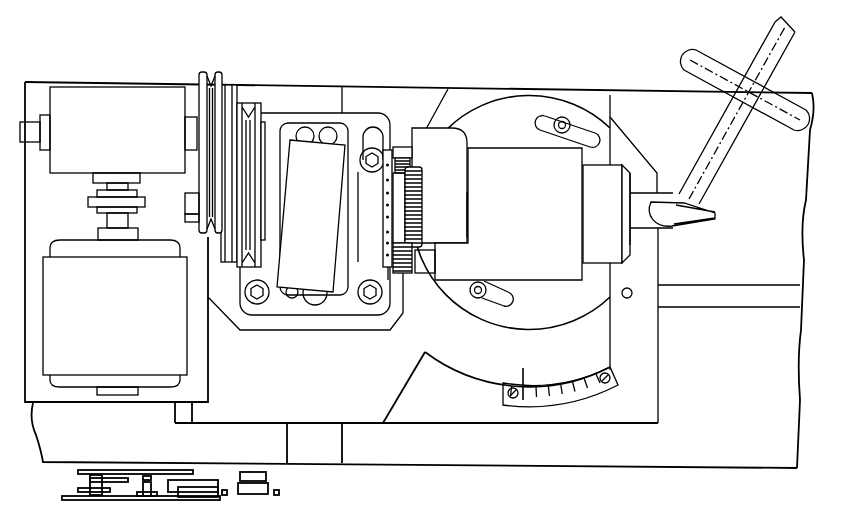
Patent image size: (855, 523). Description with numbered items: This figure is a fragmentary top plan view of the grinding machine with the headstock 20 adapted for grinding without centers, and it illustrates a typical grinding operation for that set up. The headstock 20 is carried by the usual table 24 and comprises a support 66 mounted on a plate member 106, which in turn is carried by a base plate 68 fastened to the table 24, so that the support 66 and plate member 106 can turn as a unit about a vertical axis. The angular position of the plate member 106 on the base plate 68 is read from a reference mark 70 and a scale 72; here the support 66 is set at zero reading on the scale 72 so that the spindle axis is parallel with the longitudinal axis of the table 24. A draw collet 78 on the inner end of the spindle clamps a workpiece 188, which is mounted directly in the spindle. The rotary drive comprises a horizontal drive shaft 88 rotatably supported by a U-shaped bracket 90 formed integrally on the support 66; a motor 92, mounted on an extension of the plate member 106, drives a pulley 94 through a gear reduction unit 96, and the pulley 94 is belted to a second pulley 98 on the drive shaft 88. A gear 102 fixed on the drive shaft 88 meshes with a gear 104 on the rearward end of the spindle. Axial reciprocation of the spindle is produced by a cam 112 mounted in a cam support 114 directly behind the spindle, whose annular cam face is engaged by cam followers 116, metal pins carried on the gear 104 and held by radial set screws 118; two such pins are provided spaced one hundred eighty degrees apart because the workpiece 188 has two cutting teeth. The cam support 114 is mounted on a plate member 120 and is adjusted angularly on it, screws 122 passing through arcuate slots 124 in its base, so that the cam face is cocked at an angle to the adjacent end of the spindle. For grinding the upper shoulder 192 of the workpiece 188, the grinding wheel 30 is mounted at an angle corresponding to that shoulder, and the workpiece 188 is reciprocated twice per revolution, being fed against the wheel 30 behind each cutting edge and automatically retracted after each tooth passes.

The headstock 20 is at (184, 72).
The table 24 is at (763, 470).
The grinding wheel 30 is at (713, 141).
The support 66 is at (487, 160).
The base plate 68 is at (646, 371).
The reference mark 70 is at (527, 372).
The scale 72 is at (561, 396).
The draw collet 78 is at (613, 216).
The drive shaft 88 is at (188, 204).
The U-shaped bracket 90 is at (463, 133).
The motor 92 is at (125, 315).
The pulley 94 is at (203, 92).
The gear reduction unit 96 is at (128, 131).
The second pulley 98 is at (205, 221).
The gear 102 is at (415, 194).
The gear 104 is at (397, 147).
The plate member 106 is at (596, 329).
The cam 112 is at (356, 176).
The cam support 114 is at (326, 211).
The cam followers 116 is at (383, 265).
The set screws 118 is at (407, 176).
The plate member 120 is at (356, 310).
The screws 122 is at (307, 136).
The arcuate slots 124 is at (330, 137).
The workpiece 188 is at (648, 230).
The upper shoulder 192 is at (700, 199).